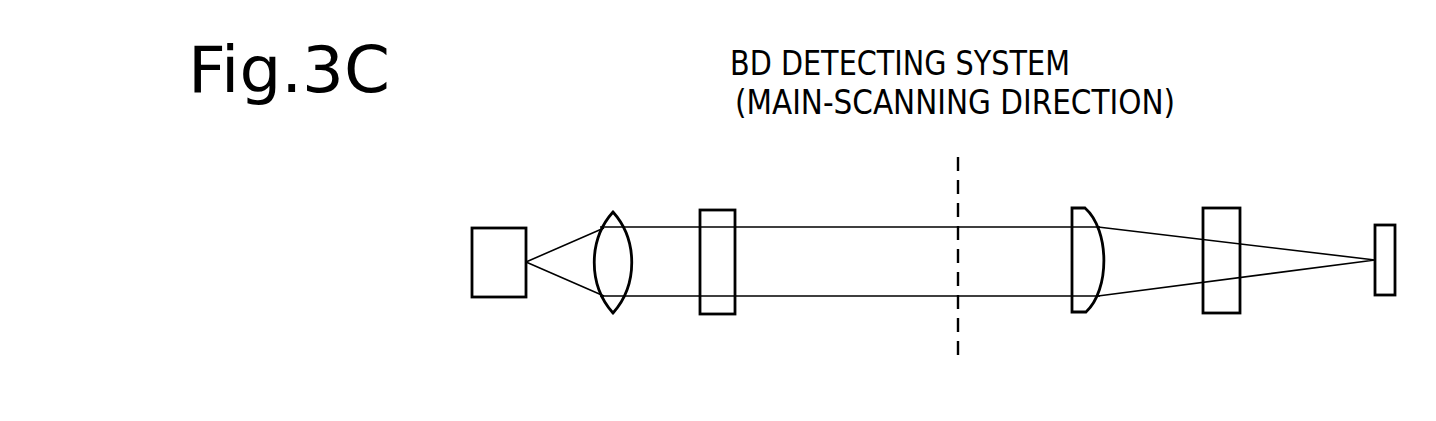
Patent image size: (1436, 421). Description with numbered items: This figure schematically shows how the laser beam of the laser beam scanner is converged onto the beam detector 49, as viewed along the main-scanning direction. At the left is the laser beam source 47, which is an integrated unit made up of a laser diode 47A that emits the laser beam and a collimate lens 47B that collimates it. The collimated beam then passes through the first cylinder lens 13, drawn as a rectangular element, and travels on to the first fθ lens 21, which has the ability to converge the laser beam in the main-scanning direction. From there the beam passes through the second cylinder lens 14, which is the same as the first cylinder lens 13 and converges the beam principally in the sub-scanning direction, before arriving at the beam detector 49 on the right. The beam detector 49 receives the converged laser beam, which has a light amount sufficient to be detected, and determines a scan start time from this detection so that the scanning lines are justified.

The laser beam source 47 is at (683, 140).
The laser diode 47A is at (500, 228).
The collimate lens 47B is at (613, 212).
The first cylinder lens 13 is at (710, 210).
The first fθ lens 21 is at (1083, 208).
The second cylinder lens 14 is at (1222, 208).
The beam detector 49 is at (1388, 225).